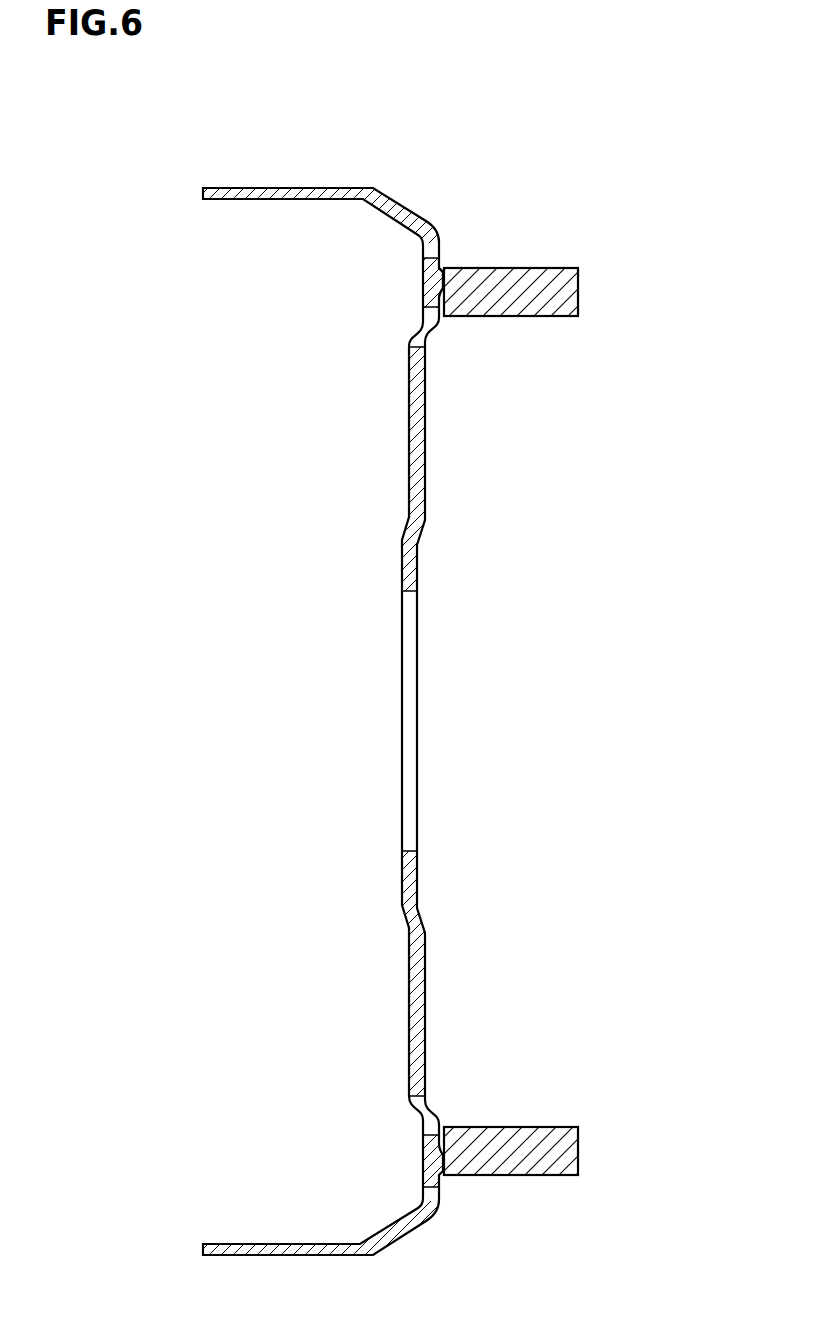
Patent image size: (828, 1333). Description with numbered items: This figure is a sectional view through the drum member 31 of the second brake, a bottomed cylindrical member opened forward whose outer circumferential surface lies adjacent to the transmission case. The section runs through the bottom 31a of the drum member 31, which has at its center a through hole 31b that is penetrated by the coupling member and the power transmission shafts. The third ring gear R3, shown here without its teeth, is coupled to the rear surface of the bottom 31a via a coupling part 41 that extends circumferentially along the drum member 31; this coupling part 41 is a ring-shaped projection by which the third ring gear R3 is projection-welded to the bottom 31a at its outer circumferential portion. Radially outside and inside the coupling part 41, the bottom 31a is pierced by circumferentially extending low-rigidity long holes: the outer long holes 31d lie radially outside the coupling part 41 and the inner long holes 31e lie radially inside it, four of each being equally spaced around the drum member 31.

The drum member 31 is at (291, 183).
The bottom 31a is at (426, 444).
The through hole 31b is at (404, 591).
The outer long holes 31d is at (417, 223).
The inner long holes 31e is at (424, 340).
The coupling part 41 is at (438, 279).
The third ring gear R3 is at (558, 268).